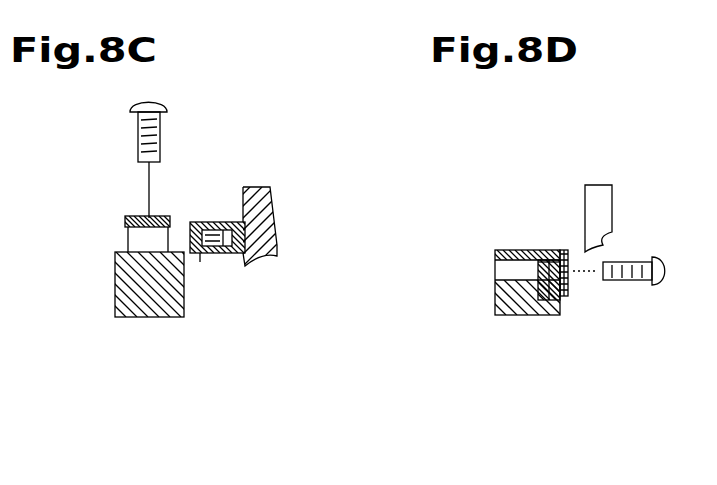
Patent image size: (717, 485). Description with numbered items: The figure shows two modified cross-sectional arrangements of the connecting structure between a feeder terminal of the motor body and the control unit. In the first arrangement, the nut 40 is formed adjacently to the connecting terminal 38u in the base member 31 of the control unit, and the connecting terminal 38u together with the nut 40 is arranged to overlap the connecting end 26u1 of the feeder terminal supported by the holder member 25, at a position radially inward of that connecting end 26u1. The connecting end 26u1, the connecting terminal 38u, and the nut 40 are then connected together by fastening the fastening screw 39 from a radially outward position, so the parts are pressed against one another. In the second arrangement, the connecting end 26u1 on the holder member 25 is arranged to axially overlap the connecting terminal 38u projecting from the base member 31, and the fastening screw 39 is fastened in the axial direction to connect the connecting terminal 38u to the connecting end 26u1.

In FIG. 8C, the fastening screw 39 is at (131, 105).
In FIG. 8D, the fastening screw 39 is at (658, 287).
In FIG. 8C, the connecting end 26u1 is at (133, 217).
In FIG. 8D, the connecting end 26u1 is at (560, 252).
In FIG. 8C, the holder member 25 is at (118, 318).
In FIG. 8D, the holder member 25 is at (515, 318).
In FIG. 8C, the connecting terminal 38u is at (200, 222).
In FIG. 8D, the connecting terminal 38u is at (563, 250).
In FIG. 8C, the nut 40 is at (200, 253).
In FIG. 8D, the nut 40 is at (557, 258).
In FIG. 8C, the base member 31 is at (255, 187).
In FIG. 8D, the base member 31 is at (598, 187).